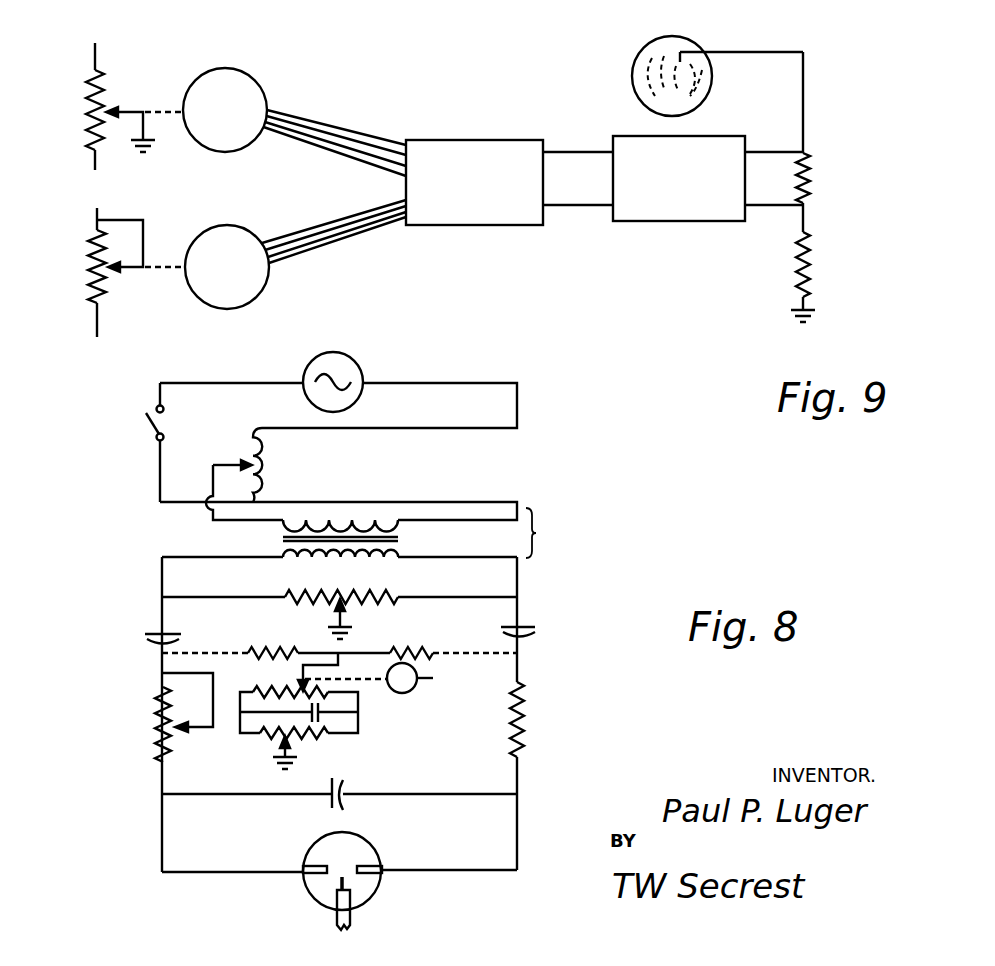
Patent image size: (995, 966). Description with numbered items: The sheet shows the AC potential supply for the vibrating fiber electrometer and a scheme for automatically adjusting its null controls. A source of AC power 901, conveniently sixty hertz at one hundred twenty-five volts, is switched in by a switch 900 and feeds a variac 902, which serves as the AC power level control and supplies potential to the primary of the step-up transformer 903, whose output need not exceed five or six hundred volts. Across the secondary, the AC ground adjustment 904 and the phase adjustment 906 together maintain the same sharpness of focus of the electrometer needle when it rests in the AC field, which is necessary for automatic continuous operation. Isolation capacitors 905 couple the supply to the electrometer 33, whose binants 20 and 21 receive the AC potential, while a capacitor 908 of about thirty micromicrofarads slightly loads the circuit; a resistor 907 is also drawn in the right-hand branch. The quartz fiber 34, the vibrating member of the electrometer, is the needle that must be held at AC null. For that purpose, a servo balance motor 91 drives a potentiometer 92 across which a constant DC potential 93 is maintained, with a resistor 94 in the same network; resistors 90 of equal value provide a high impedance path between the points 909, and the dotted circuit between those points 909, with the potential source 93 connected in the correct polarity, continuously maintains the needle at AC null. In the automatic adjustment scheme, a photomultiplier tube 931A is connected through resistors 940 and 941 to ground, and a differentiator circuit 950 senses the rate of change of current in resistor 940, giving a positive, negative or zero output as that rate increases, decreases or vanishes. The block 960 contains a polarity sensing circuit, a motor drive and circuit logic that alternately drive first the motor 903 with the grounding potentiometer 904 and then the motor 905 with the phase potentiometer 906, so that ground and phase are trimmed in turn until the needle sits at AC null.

In FIG. 8, the switch 900 is at (146, 424).
In FIG. 8, the source of AC power 901 is at (350, 364).
In FIG. 8, the variac 902 is at (255, 463).
In FIG. 9, the step-up transformer 903 is at (247, 88).
In FIG. 8, the step-up transformer 903 is at (375, 530).
In FIG. 9, the ground adjustment 904 is at (92, 137).
In FIG. 8, the ground adjustment 904 is at (395, 600).
In FIG. 9, the isolation capacitors 905 is at (253, 287).
In FIG. 8, the isolation capacitors 905 is at (147, 625).
In FIG. 9, the phase adjustment 906 is at (92, 290).
In FIG. 8, the phase adjustment 906 is at (160, 736).
In FIG. 8, the resistor 907 is at (528, 711).
In FIG. 8, the capacitor 908 is at (340, 776).
In FIG. 8, the points 909 is at (160, 653).
In FIG. 8, the resistors 90 is at (272, 647).
In FIG. 8, the servo balance motor 91 is at (427, 679).
In FIG. 8, the potentiometer 92 is at (272, 687).
In FIG. 8, the constant DC potential 93 is at (326, 717).
In FIG. 8, the resistor 94 is at (260, 740).
In FIG. 8, the binant 20 is at (367, 862).
In FIG. 8, the binant 21 is at (323, 862).
In FIG. 8, the electrometer 33 is at (368, 890).
In FIG. 8, the quartz fiber 34 is at (340, 885).
In FIG. 9, the polarity sensing circuit, motor drive and circuit logic 960 is at (493, 127).
In FIG. 9, the differentiator circuit 950 is at (644, 145).
In FIG. 9, the photomultiplier tube 931A is at (640, 63).
In FIG. 9, the resistor 940 is at (808, 177).
In FIG. 9, the resistor 941 is at (808, 268).